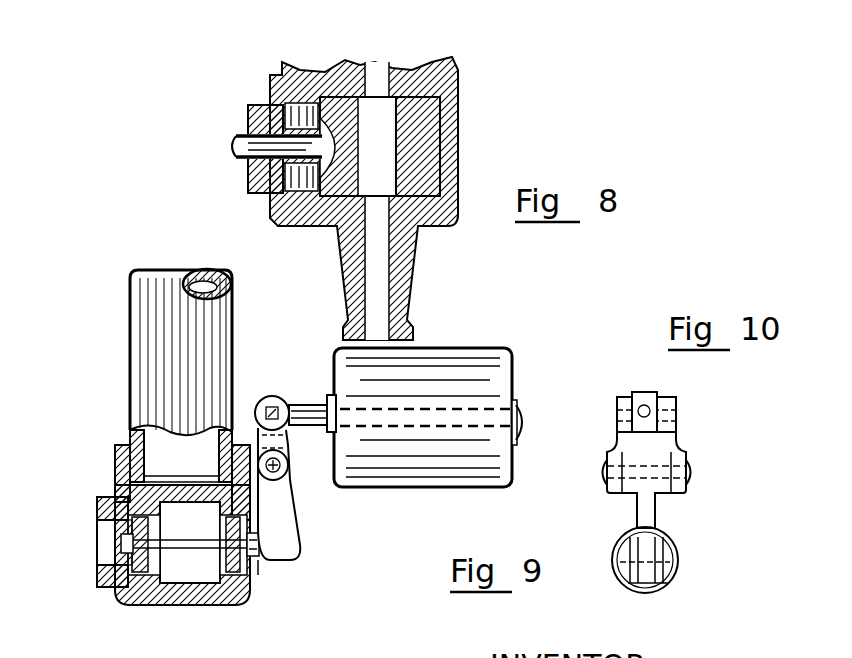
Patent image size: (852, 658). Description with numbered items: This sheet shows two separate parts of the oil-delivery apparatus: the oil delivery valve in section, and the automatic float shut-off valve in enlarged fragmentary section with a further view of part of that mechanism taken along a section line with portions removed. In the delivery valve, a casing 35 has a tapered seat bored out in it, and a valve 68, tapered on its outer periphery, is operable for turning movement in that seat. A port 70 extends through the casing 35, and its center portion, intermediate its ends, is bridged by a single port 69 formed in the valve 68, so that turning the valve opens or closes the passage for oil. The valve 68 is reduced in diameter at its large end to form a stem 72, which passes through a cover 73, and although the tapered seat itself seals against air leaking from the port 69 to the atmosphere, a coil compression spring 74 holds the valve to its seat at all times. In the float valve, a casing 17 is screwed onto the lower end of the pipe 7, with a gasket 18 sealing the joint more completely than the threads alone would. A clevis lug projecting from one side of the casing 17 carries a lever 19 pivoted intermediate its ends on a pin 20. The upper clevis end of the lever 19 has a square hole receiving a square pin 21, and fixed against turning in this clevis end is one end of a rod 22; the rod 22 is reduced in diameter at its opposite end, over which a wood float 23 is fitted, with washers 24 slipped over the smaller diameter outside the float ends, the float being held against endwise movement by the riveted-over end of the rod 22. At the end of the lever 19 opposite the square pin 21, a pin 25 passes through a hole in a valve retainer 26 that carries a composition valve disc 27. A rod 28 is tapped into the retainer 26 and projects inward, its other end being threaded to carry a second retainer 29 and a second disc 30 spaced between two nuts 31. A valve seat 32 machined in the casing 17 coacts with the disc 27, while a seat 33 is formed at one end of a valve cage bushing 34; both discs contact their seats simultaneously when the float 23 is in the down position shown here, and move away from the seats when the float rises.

In FIG. 9, the pipe 7 is at (127, 300).
In FIG. 9, the casing 17 is at (114, 455).
In FIG. 10, the casing 17 is at (688, 456).
In FIG. 9, the gasket 18 is at (140, 484).
In FIG. 9, the lever 19 is at (294, 521).
In FIG. 9, the pin 20 is at (287, 474).
In FIG. 9, the square pin 21 is at (268, 405).
In FIG. 9, the rod 22 is at (312, 400).
In FIG. 10, the rod 22 is at (646, 404).
In FIG. 9, the wood float 23 is at (500, 350).
In FIG. 9, the washers 24 is at (521, 395).
In FIG. 9, the pin 25 is at (252, 565).
In FIG. 9, the valve retainer 26 is at (222, 604).
In FIG. 9, the composition valve disc 27 is at (236, 555).
In FIG. 9, the rod 28 is at (176, 549).
In FIG. 9, the second retainer 29 is at (150, 522).
In FIG. 9, the second disc 30 is at (126, 529).
In FIG. 9, the nuts 31 is at (124, 548).
In FIG. 9, the valve seat 32 is at (226, 527).
In FIG. 9, the seat 33 is at (125, 570).
In FIG. 9, the valve cage bushing 34 is at (96, 510).
In FIG. 8, the casing 35 is at (459, 72).
In FIG. 8, the valve 68 is at (425, 122).
In FIG. 8, the port 69 is at (380, 152).
In FIG. 8, the port 70 is at (378, 62).
In FIG. 8, the stem 72 is at (241, 133).
In FIG. 8, the cover 73 is at (250, 186).
In FIG. 8, the coil compression spring 74 is at (292, 192).